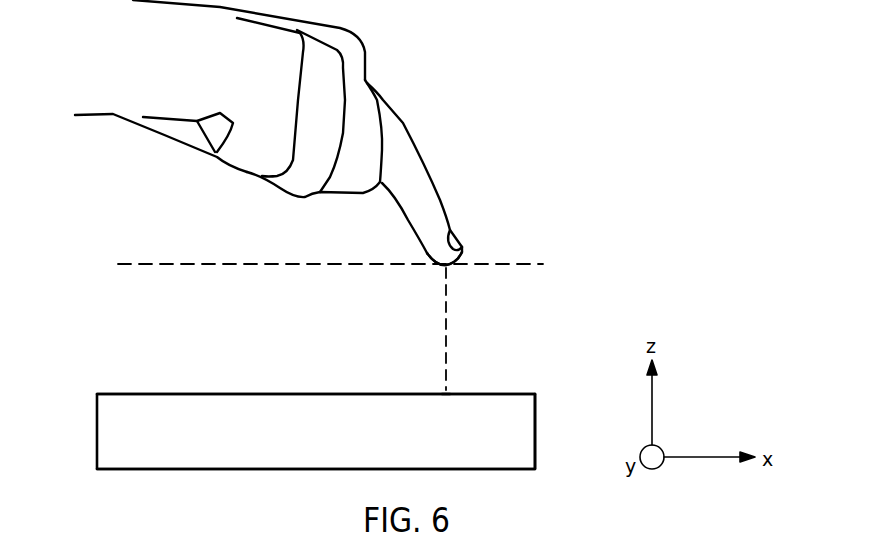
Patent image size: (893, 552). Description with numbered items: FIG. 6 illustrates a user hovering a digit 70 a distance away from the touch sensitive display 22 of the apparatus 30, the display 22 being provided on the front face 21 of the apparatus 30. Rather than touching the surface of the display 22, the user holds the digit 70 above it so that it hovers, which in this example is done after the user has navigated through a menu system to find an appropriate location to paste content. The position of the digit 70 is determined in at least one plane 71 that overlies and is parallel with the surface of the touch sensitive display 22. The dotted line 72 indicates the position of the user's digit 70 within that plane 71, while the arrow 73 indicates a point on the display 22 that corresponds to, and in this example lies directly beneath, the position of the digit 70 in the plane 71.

The front face 21 is at (198, 376).
The touch sensitive display 22 is at (277, 393).
The apparatus 30 is at (102, 481).
The digit 70 is at (467, 253).
The plane 71 is at (207, 266).
The dotted line 72 is at (448, 318).
The arrow 73 is at (450, 389).